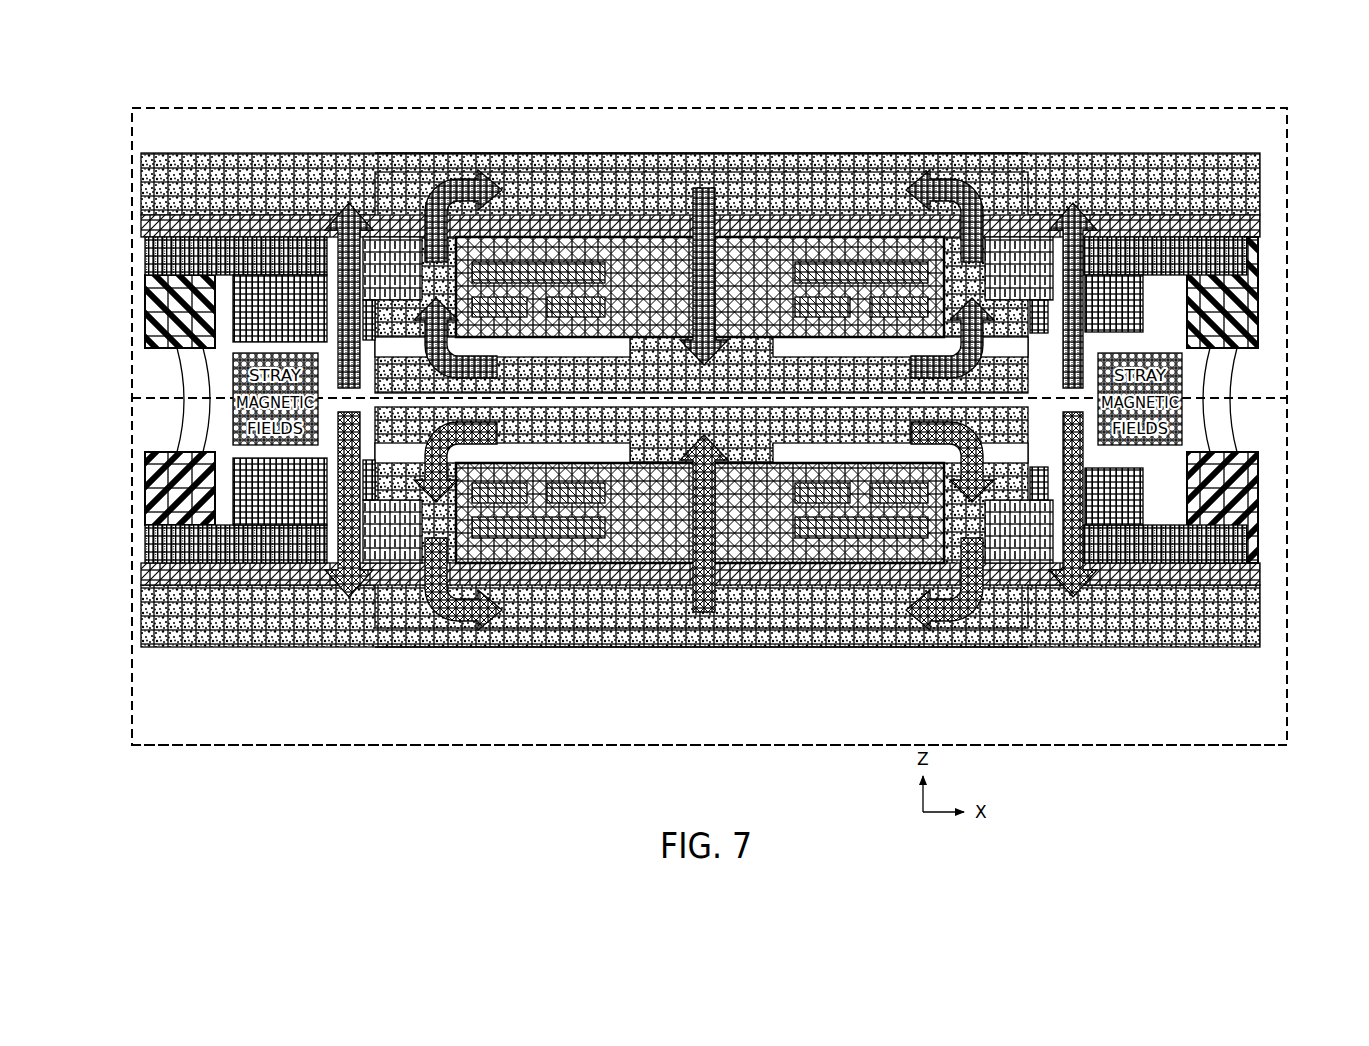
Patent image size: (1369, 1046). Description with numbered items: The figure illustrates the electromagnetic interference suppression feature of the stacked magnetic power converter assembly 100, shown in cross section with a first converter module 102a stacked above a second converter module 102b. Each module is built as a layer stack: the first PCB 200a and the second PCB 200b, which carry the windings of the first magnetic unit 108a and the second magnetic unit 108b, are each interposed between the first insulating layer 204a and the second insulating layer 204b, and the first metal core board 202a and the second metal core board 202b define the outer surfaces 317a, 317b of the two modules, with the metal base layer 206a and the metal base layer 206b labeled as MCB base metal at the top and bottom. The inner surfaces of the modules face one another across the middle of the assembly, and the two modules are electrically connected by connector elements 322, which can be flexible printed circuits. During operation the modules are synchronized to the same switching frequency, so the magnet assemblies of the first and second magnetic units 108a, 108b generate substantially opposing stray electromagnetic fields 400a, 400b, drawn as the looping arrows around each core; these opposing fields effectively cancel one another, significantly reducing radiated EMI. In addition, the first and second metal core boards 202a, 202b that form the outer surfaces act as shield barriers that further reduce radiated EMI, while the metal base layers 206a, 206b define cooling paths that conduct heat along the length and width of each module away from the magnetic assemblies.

The stacked magnetic power converter assembly 100 is at (270, 101).
The first converter module 102a is at (128, 151).
The second converter module 102b is at (128, 632).
The first magnetic unit 108a is at (626, 248).
The second magnetic unit 108b is at (788, 510).
The first PCB 200a is at (700, 287).
The second PCB 200b is at (700, 513).
The first metal core board 202a is at (818, 160).
The second metal core board 202b is at (803, 627).
The first insulating layer 204a is at (1255, 228).
The second insulating layer 204b is at (1255, 583).
The metal base layer of the first converter module 206a is at (1255, 182).
The metal base layer of the second converter module 206b is at (1255, 632).
The outer surface of the first converter module 317a is at (905, 158).
The outer surface of the second converter module 317b is at (565, 647).
The connector element 322 is at (187, 427).
The first stray electromagnetic field 400a is at (706, 186).
The second stray electromagnetic field 400b is at (711, 614).